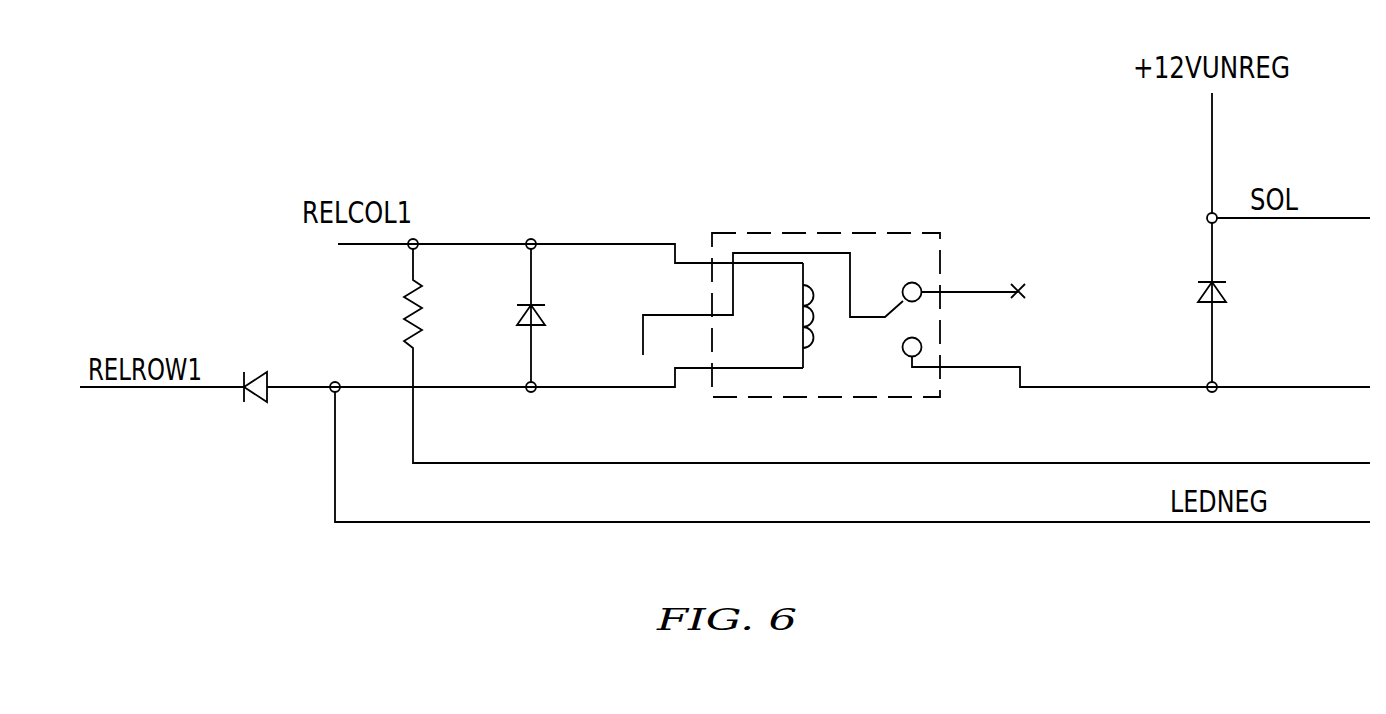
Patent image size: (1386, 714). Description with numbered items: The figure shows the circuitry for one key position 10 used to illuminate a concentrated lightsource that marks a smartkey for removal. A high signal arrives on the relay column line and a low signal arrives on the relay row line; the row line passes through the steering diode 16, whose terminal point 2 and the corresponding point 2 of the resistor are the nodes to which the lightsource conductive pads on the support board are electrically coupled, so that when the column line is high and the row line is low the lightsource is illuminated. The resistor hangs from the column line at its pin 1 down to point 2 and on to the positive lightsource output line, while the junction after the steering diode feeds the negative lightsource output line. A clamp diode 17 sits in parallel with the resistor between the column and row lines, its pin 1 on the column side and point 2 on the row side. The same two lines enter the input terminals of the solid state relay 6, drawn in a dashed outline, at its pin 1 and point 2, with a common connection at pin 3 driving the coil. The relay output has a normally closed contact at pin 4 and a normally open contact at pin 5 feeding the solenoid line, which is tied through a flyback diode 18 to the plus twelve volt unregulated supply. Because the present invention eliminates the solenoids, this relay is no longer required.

The diode D16 16 is at (253, 378).
The diode D17 17 is at (555, 315).
The diode D18 18 is at (1236, 298).
The relay RLY6 6 is at (826, 316).
The key position circuit 10 is at (756, 277).
The pin 1 is at (880, 345).
The point 2 is at (694, 351).
The pin 3 is at (773, 304).
The pin 4 is at (980, 271).
The pin 5 is at (1141, 363).